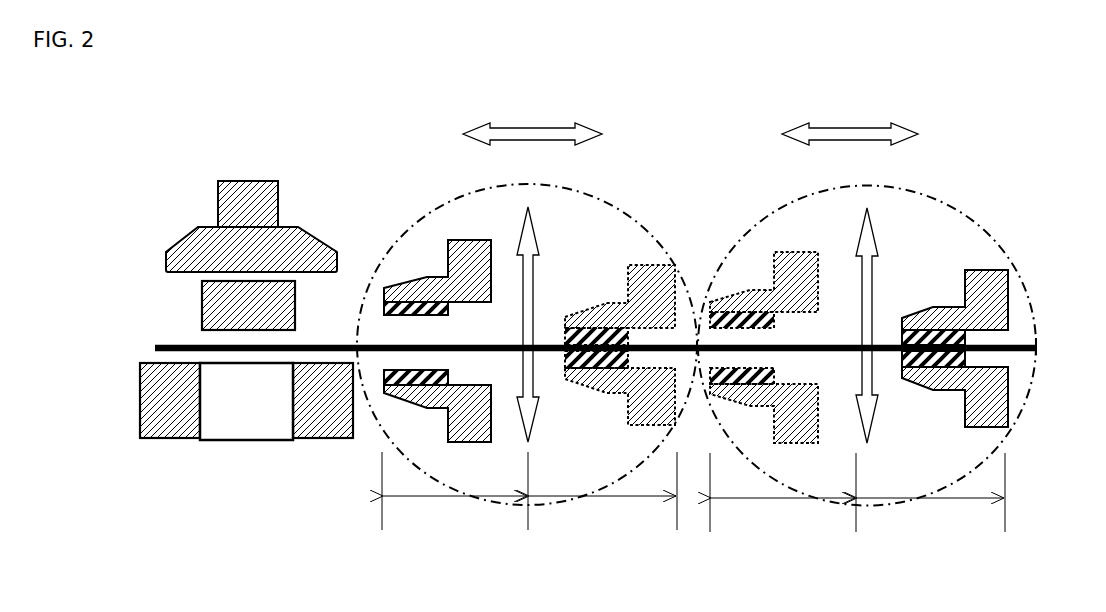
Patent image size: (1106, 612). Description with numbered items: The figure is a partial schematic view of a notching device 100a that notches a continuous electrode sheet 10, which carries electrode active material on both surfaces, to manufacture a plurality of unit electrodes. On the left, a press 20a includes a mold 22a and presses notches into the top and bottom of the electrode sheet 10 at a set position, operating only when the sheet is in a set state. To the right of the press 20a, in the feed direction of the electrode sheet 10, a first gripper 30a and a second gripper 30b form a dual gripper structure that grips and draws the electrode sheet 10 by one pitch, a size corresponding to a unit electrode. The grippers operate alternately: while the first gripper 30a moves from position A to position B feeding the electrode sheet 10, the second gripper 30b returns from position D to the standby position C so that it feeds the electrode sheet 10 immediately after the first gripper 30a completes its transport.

The notching device 100a is at (107, 118).
The press 20a is at (264, 174).
The mold 22a is at (202, 313).
The first gripper 30a is at (608, 194).
The second gripper 30b is at (946, 198).
The electrode sheet 10 is at (1016, 343).